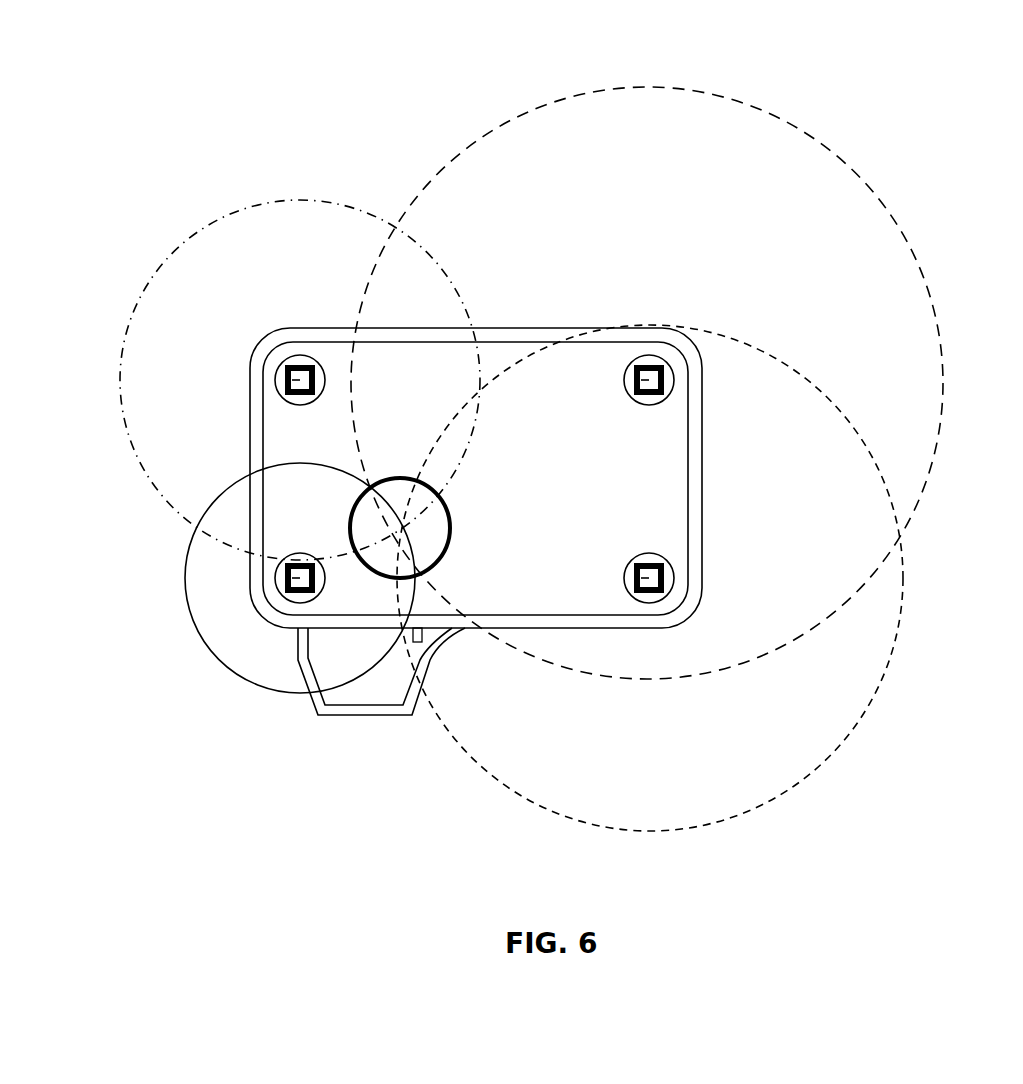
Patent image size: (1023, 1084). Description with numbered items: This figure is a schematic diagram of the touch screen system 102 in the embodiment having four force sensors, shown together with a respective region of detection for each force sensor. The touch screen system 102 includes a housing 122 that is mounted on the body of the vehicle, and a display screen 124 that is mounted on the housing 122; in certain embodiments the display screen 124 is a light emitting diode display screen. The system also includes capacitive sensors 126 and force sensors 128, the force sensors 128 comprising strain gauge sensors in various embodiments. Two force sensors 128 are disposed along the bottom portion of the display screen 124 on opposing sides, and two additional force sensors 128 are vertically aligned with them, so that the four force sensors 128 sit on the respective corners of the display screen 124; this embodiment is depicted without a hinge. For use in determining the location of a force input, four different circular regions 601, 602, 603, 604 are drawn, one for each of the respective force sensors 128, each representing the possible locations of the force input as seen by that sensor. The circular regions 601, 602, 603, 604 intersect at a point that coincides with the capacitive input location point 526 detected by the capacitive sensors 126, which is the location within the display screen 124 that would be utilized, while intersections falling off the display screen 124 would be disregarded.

The touch screen system 102 is at (110, 74).
The housing 122 is at (702, 495).
The display screen 124 is at (273, 428).
The capacitive sensors 126 is at (493, 518).
The capacitive input location point 526 is at (404, 526).
The force sensors 128 is at (292, 379).
The first circle 601 is at (292, 683).
The second circle 602 is at (783, 772).
The third circle 603 is at (141, 383).
The fourth circle 604 is at (802, 157).